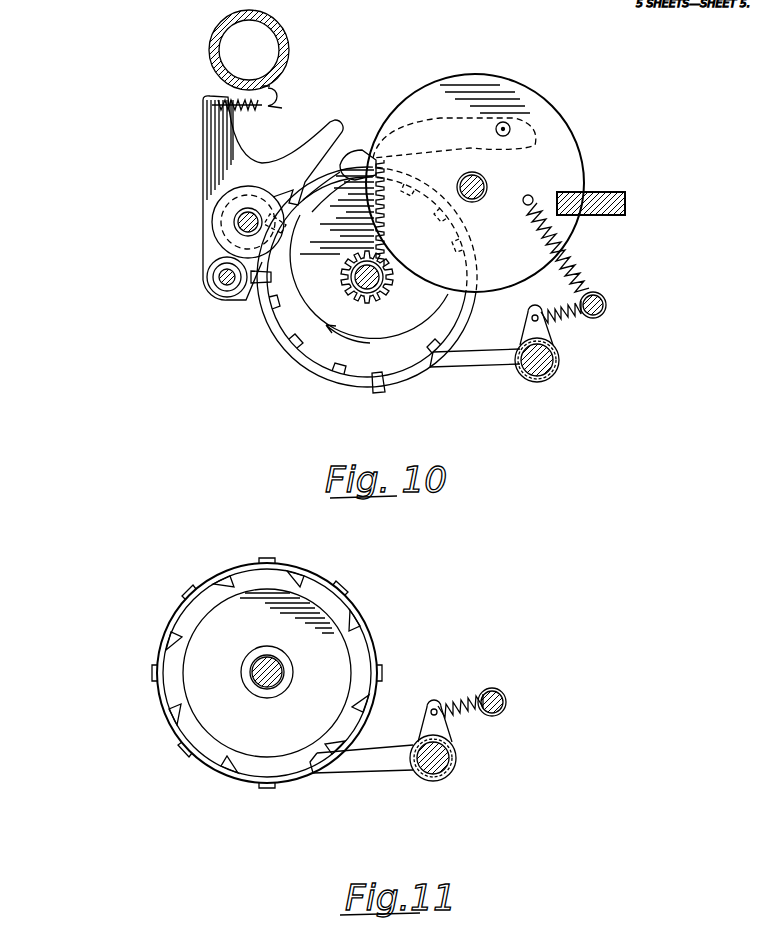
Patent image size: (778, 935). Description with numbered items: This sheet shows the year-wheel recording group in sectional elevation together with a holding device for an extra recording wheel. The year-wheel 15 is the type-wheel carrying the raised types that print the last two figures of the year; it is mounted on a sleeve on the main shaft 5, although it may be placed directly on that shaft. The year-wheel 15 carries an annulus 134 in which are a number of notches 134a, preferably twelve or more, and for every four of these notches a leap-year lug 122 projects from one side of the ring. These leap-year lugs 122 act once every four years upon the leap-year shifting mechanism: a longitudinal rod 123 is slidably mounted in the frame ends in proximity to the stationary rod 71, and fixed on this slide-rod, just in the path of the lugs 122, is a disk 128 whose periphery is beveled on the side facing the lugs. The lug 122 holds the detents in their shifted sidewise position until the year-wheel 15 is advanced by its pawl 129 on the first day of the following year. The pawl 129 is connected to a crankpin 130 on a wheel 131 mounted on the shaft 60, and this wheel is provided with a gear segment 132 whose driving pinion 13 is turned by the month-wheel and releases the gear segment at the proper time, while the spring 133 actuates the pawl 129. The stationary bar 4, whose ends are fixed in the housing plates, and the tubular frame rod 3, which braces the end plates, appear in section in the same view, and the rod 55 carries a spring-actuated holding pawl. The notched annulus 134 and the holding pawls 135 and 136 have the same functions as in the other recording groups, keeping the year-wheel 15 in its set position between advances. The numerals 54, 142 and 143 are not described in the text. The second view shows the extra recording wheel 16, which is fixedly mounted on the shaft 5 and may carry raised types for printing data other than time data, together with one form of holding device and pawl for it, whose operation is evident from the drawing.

In FIG. 10, the tubular rod 3 is at (214, 35).
In FIG. 10, the stationary bar 4 is at (626, 205).
In FIG. 10, the shaft 5 is at (375, 298).
In FIG. 11, the shaft 5 is at (284, 672).
In FIG. 10, the pinion 13 is at (348, 295).
In FIG. 10, the year-wheel 15 is at (332, 382).
In FIG. 11, the extra recording wheel 16 is at (160, 705).
In FIG. 10, the pin 54 is at (607, 305).
In FIG. 11, the pin 54 is at (502, 693).
In FIG. 10, the rod 55 is at (561, 360).
In FIG. 11, the rod 55 is at (458, 758).
In FIG. 10, the shaft 60 is at (488, 176).
In FIG. 10, the rod 71 is at (216, 278).
In FIG. 10, the leap-year lug 122 is at (290, 258).
In FIG. 10, the longitudinal rod 123 is at (240, 213).
In FIG. 10, the disk 128 is at (216, 227).
In FIG. 10, the pawl 129 is at (362, 150).
In FIG. 10, the crankpin 130 is at (511, 127).
In FIG. 10, the wheel 131 is at (584, 153).
In FIG. 10, the gear segment 132 is at (367, 217).
In FIG. 10, the spring 133 is at (572, 258).
In FIG. 10, the annulus 134 is at (317, 353).
In FIG. 10, the notches 134a is at (290, 347).
In FIG. 10, the holding pawl 135 is at (287, 187).
In FIG. 10, the holding pawl 136 is at (480, 366).
In FIG. 10, the bushing 142 is at (542, 382).
In FIG. 10, the arm 143 is at (462, 172).